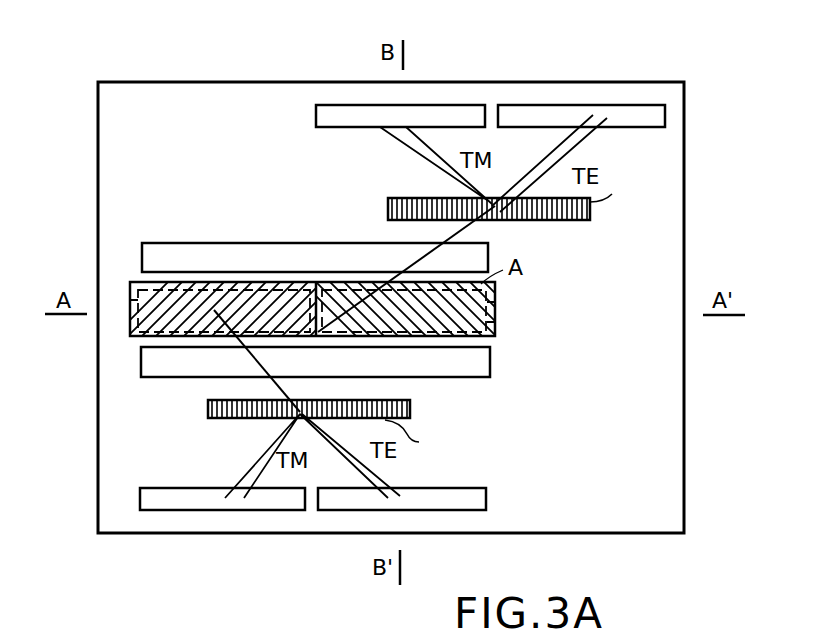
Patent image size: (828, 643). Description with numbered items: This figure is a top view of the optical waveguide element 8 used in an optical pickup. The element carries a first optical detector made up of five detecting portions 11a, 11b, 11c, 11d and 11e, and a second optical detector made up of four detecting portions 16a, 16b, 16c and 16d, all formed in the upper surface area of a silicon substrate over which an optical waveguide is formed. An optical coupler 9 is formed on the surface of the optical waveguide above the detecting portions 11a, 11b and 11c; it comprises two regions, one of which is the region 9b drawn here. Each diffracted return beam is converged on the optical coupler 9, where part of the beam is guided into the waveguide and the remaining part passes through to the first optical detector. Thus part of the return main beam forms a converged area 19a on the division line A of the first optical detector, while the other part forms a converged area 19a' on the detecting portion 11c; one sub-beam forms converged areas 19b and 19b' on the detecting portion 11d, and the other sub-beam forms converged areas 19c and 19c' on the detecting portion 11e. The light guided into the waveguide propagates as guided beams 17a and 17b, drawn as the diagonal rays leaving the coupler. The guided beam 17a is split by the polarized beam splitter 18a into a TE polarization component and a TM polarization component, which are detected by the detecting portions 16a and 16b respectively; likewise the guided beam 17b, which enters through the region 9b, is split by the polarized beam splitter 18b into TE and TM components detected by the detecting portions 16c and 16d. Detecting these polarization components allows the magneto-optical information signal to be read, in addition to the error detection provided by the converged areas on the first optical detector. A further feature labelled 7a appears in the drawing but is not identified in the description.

The lower clad region 7a is at (484, 336).
The optical waveguide element 8 is at (538, 82).
The optical coupler 9 is at (494, 333).
The region of the optical coupler 9b is at (138, 336).
The detecting portion 11a is at (494, 323).
The detecting portion 11b is at (494, 304).
The detecting portion 11c is at (138, 298).
The detecting portion 11d is at (142, 371).
The detecting portion 11e is at (170, 253).
The detecting portion 16a is at (584, 105).
The detecting portion 16b is at (452, 105).
The detecting portion 16c is at (479, 492).
The detecting portion 16d is at (166, 510).
The guided beam 17a is at (490, 222).
The guided beam 17b is at (212, 418).
The polarized beam splitter 18a is at (624, 198).
The polarized beam splitter 18b is at (425, 442).
The converged area 19a is at (369, 351).
The converged area 19a' is at (362, 269).
The converged area 19b is at (353, 432).
The converged area 19b' is at (263, 438).
The converged area 19c is at (416, 186).
The converged area 19c' is at (405, 183).